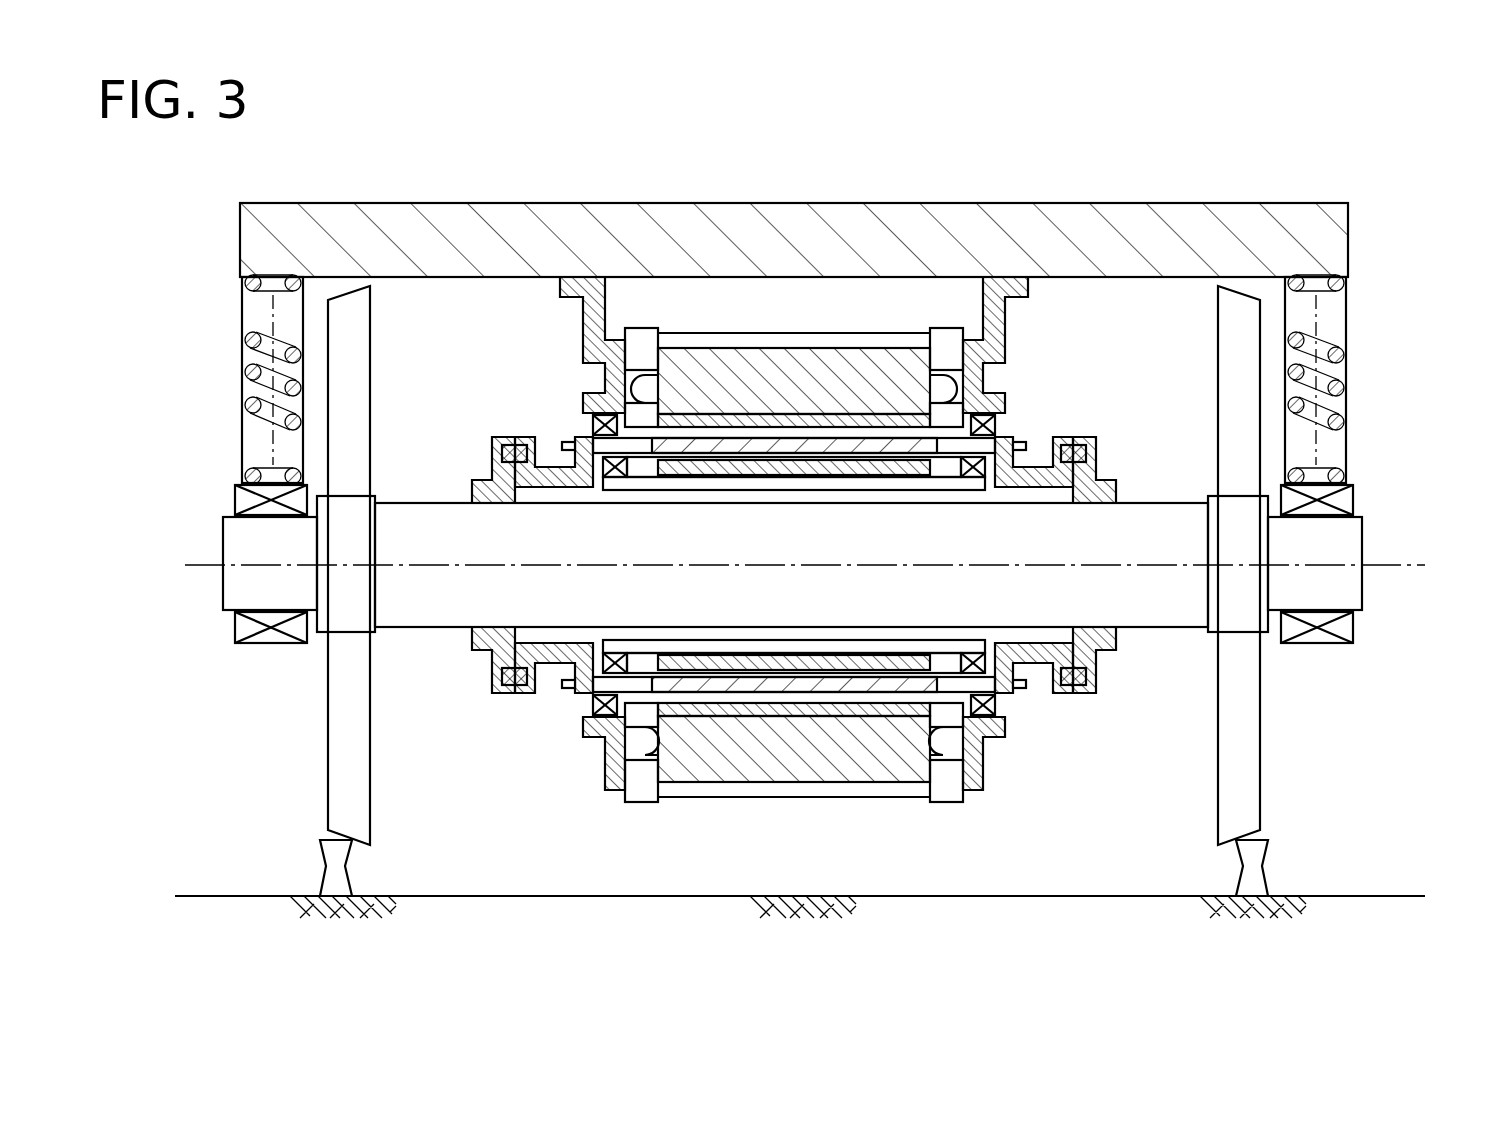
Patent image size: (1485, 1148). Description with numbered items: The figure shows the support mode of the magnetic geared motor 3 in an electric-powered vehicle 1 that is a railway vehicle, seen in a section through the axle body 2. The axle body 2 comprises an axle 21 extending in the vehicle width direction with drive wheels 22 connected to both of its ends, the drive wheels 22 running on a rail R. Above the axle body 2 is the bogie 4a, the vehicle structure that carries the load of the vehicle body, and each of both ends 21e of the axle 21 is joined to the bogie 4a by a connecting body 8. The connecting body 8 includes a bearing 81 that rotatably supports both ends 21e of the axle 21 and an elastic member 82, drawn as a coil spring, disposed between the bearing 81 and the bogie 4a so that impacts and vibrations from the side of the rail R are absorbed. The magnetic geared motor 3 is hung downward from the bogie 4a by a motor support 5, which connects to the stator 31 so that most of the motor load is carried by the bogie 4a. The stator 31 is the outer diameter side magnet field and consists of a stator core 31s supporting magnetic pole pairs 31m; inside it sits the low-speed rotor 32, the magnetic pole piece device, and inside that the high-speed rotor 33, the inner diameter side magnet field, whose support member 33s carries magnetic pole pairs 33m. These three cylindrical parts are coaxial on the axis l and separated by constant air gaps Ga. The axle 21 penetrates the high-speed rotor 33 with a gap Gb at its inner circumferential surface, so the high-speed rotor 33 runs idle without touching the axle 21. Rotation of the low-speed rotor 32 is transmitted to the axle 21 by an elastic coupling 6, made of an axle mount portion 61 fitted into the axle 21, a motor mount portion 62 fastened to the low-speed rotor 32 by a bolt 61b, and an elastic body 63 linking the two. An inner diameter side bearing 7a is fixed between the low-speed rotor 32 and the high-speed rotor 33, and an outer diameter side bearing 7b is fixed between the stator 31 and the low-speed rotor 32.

The electric-powered vehicle 1 is at (825, 185).
The axle body 2 is at (804, 565).
The magnetic geared motor 3 is at (871, 291).
The bogie 4a is at (1247, 203).
The motor support 5 is at (1005, 306).
The elastic coupling 6 is at (752, 523).
The inner diameter side bearing 7a is at (620, 638).
The outer diameter side bearing 7b is at (590, 700).
The connecting body 8 is at (855, 459).
The axle 21 is at (1155, 628).
The both ends of the axle 21e is at (232, 612).
The drive wheels 22 is at (1215, 792).
The stator 31 is at (940, 380).
The stator core 31s is at (833, 388).
The magnetic pole pairs 31m is at (893, 417).
The low-speed rotor 32 is at (950, 432).
The high-speed rotor 33 is at (950, 468).
The magnetic pole pairs 33m is at (682, 473).
The support member 33s is at (745, 490).
The axle mount portion 61 is at (496, 485).
The bolt 61b is at (568, 442).
The motor mount portion 62 is at (512, 440).
The elastic body 63 is at (504, 447).
The bearing 81 is at (835, 536).
The elastic member 82 is at (1348, 343).
The air gaps Ga is at (688, 670).
The gap Gb is at (855, 848).
The rail R is at (332, 872).
The axis l is at (1410, 556).